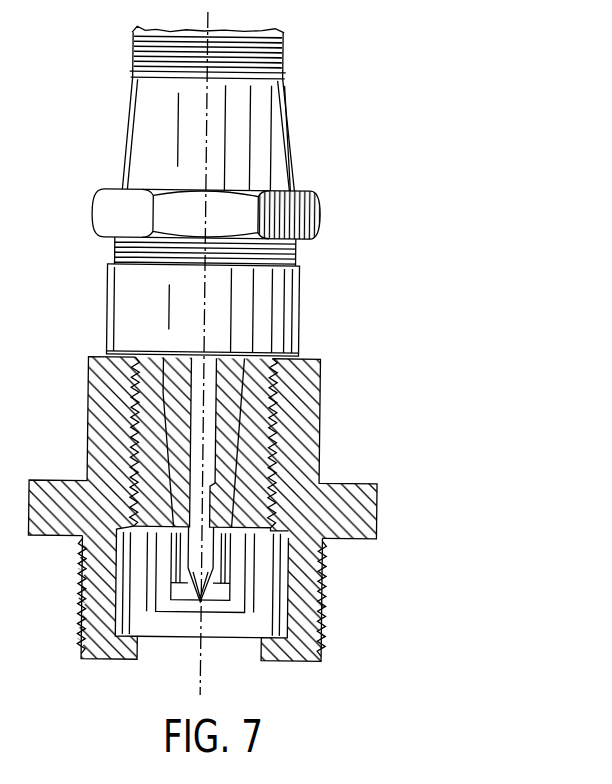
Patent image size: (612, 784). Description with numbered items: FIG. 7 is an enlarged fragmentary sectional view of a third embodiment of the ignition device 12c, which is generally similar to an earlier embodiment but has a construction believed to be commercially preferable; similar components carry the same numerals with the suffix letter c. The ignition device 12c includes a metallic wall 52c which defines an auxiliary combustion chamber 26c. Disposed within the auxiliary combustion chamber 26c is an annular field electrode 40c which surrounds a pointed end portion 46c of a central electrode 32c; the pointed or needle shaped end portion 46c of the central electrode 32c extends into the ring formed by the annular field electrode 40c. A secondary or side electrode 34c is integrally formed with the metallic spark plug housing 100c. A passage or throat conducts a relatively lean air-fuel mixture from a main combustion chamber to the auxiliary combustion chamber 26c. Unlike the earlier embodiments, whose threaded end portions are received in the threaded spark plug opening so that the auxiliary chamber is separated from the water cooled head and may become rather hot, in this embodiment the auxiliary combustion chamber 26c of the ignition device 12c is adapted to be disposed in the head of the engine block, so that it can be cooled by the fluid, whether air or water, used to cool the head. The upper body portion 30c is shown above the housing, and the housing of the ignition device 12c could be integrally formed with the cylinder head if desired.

The ignition device 12c is at (466, 102).
The connector body 30c is at (140, 151).
The central electrode 32c is at (300, 355).
The spark plug housing 100c is at (208, 414).
The side electrode 34c is at (228, 557).
The metallic wall 52c is at (322, 591).
The auxiliary combustion chamber 26c is at (267, 617).
The annular field electrode 40c is at (246, 600).
The pointed end portion 46c is at (190, 590).